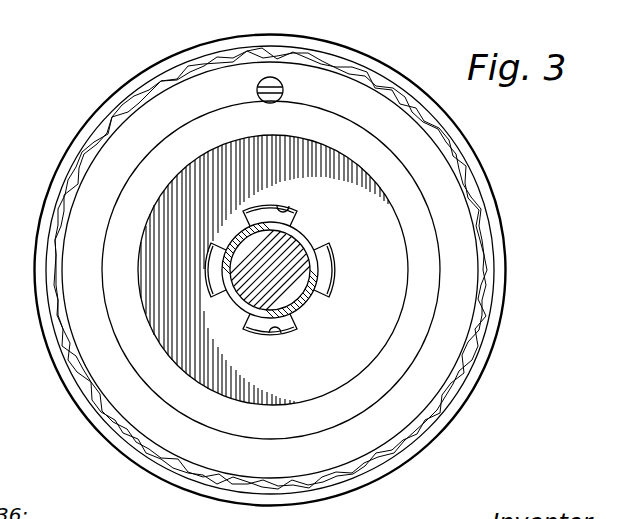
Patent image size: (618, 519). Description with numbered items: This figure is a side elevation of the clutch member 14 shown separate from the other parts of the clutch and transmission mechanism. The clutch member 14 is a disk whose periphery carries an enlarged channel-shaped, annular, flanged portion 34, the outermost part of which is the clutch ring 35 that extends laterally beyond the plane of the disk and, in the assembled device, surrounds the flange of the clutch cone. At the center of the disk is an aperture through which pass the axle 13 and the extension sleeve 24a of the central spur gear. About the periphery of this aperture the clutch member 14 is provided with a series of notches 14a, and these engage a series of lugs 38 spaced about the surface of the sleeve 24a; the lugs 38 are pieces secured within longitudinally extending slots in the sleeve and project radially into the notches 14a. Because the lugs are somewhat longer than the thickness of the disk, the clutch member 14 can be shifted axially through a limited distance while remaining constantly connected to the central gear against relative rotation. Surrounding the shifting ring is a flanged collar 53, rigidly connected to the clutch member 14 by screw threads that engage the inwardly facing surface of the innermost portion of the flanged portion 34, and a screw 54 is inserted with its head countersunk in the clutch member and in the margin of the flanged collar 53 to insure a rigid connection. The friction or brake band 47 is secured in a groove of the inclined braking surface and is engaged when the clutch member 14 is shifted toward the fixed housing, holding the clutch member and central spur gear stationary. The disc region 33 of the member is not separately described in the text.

The axle 13 is at (282, 280).
The clutch member 14 is at (503, 229).
The notches 14a is at (285, 206).
The extension sleeve of the central spur gear 24a is at (300, 240).
The wheel disc 33 is at (377, 318).
The channel-shaped annular flanged portion 34 is at (372, 438).
The clutch ring 35 is at (467, 382).
The lugs 38 is at (205, 270).
The friction or brake band 47 is at (408, 97).
The flanged collar 53 is at (318, 122).
The screw 54 is at (279, 82).